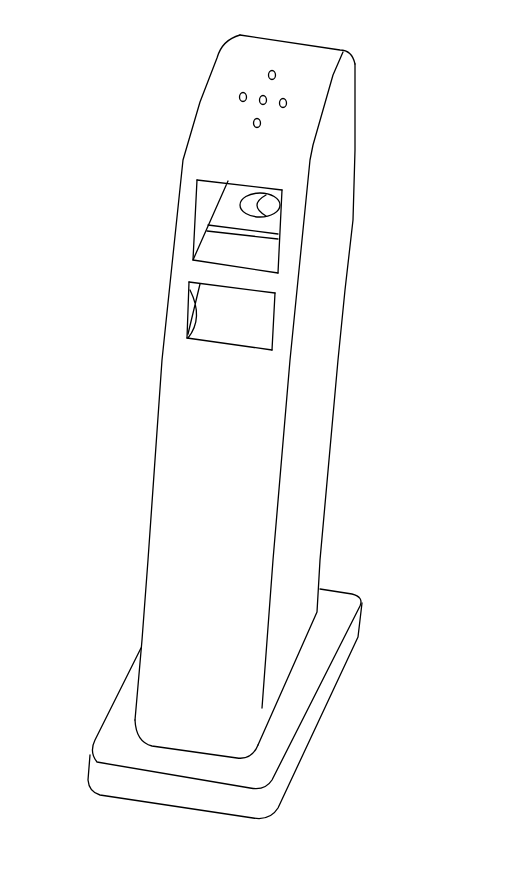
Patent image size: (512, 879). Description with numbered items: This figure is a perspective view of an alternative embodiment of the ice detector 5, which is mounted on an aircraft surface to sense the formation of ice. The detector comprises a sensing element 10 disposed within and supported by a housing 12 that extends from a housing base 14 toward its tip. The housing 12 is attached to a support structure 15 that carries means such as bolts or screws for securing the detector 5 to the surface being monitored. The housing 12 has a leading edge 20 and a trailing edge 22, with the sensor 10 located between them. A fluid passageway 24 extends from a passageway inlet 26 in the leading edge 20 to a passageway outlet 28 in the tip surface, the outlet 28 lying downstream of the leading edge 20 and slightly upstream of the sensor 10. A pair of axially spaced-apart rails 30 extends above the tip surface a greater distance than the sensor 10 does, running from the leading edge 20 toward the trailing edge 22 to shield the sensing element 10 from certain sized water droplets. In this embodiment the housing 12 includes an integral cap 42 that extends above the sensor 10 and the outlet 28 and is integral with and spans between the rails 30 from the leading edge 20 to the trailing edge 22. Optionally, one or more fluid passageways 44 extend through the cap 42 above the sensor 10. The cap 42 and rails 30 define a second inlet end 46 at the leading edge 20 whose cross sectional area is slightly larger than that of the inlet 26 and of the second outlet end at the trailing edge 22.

The ice detector 5 is at (459, 127).
The sensing element 10 is at (263, 205).
The housing 12 is at (175, 473).
The housing base 14 is at (148, 712).
The support structure 15 is at (313, 672).
The leading edge 20 is at (202, 532).
The trailing edge 22 is at (337, 405).
The fluid passageway 24 is at (243, 318).
The passageway inlet 26 is at (195, 287).
The passageway outlet 28 is at (225, 228).
The rails 30 is at (182, 238).
The integral cap 42 is at (317, 83).
The fluid passageways 44 is at (240, 93).
The second inlet end 46 is at (207, 195).